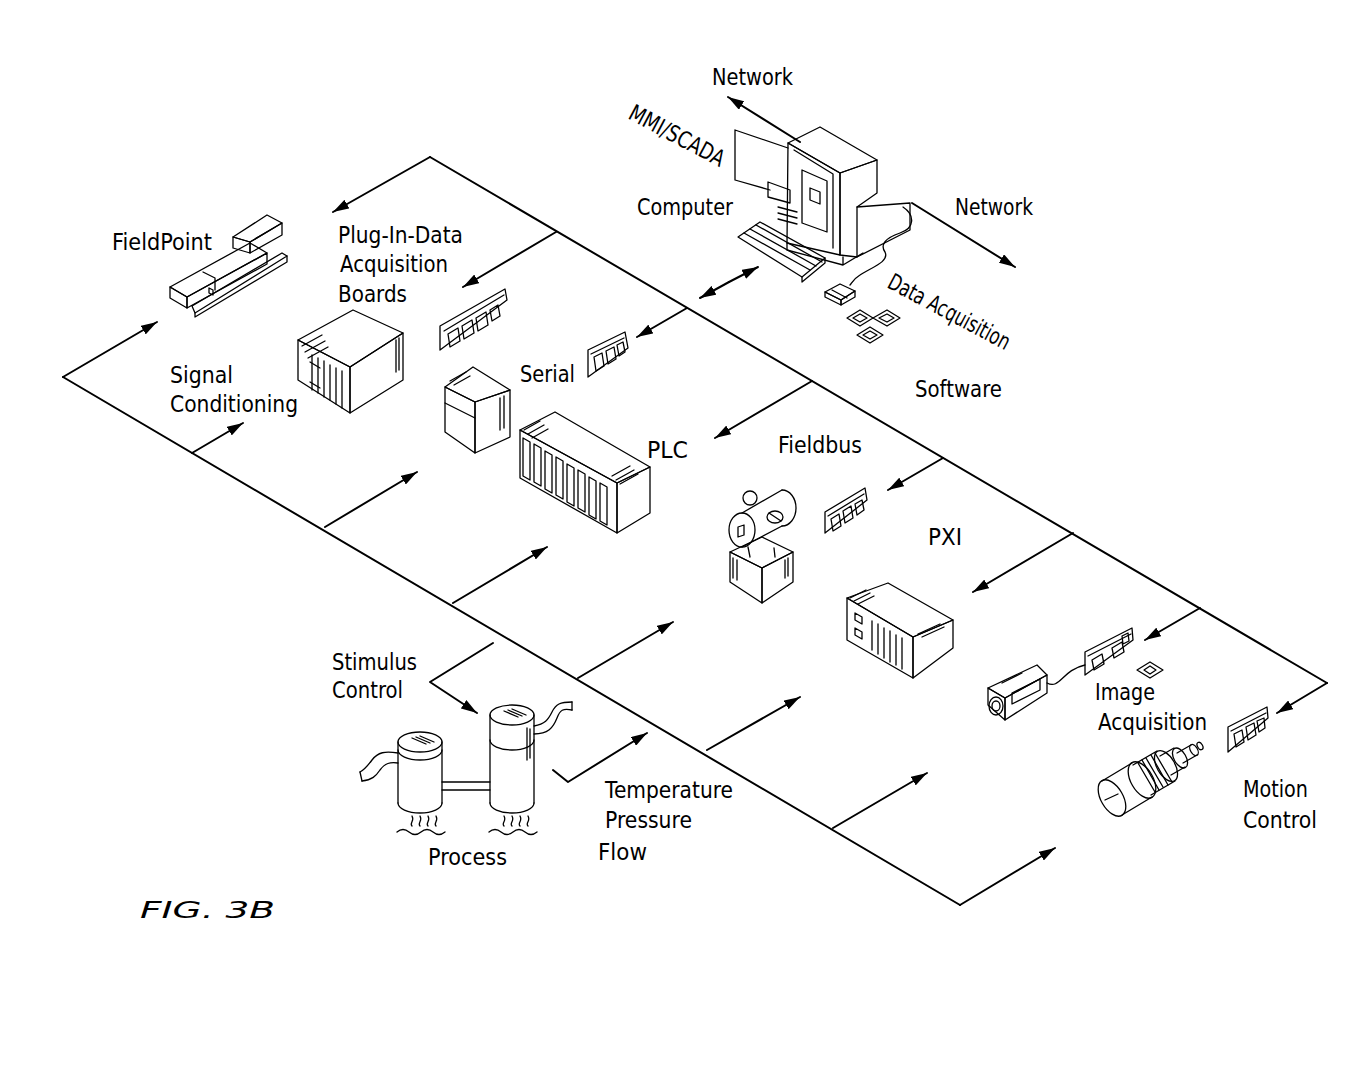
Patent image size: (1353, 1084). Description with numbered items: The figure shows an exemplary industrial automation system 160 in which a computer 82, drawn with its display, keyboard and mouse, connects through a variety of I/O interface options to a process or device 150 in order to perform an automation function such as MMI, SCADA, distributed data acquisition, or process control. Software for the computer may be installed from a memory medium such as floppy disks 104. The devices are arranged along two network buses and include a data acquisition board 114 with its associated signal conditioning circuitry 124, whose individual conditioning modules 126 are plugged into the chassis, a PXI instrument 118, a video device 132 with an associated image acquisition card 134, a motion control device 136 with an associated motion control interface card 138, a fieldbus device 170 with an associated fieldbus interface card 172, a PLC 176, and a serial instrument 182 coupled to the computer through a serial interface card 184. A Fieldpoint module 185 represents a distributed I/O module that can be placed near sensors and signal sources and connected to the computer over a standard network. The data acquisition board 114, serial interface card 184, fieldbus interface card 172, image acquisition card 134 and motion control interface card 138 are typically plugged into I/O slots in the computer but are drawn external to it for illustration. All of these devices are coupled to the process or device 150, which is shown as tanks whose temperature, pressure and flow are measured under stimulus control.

The computer system 82 is at (843, 137).
The floppy disks 104 is at (873, 337).
The data acquisition board 114 is at (502, 292).
The PXI instrument 118 is at (903, 593).
The signal conditioning circuitry 124 is at (330, 381).
The signal conditioning modules 126 is at (323, 393).
The video device 132 is at (993, 718).
The image acquisition card 134 is at (1103, 638).
The motion control device 136 is at (1140, 807).
The motion control interface card 138 is at (1255, 742).
The process or device 150 is at (372, 758).
The industrial automation system 160 is at (1173, 248).
The fieldbus device 170 is at (735, 578).
The fieldbus interface card 172 is at (845, 500).
The PLC 176 is at (600, 445).
The serial instrument 182 is at (448, 430).
The serial interface card 184 is at (603, 343).
The Fieldpoint module 185 is at (240, 222).